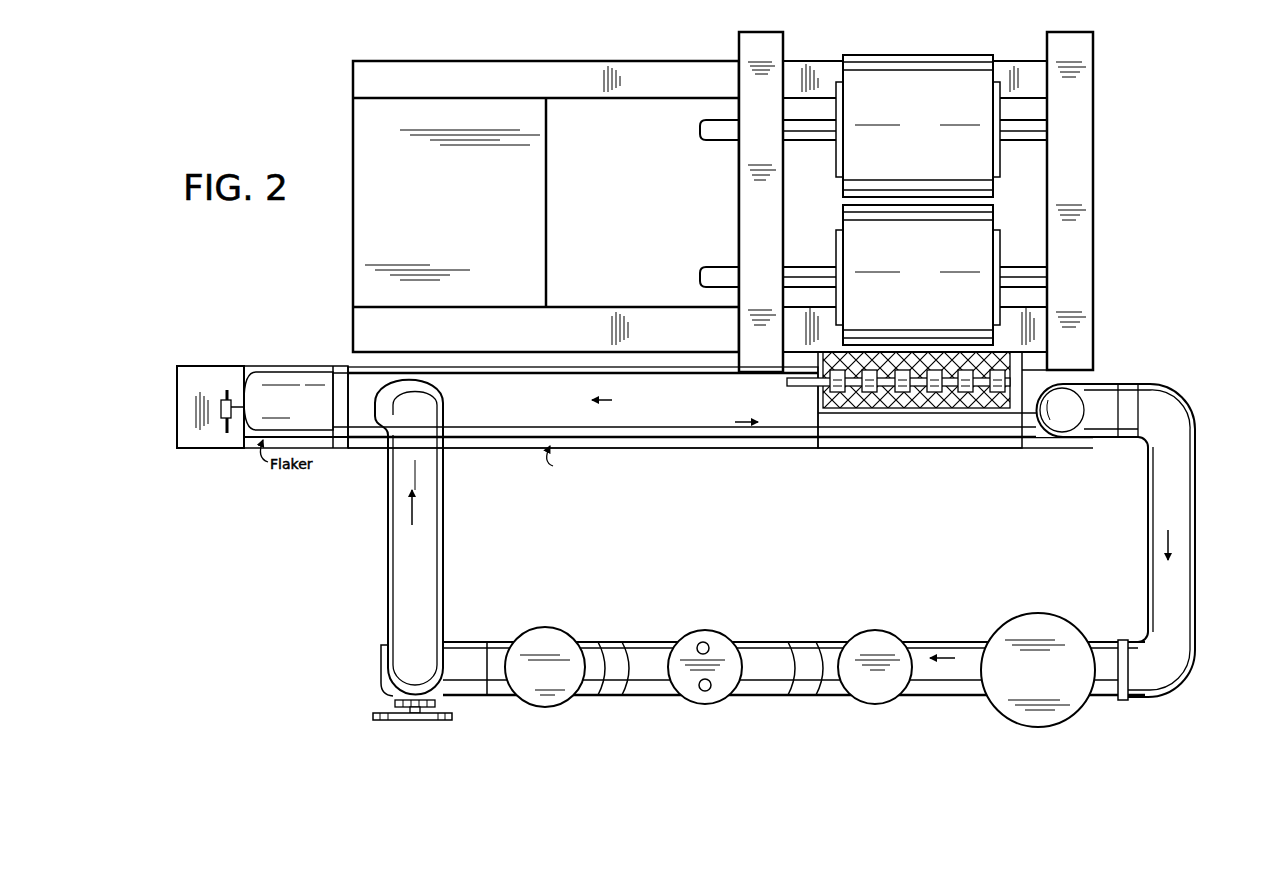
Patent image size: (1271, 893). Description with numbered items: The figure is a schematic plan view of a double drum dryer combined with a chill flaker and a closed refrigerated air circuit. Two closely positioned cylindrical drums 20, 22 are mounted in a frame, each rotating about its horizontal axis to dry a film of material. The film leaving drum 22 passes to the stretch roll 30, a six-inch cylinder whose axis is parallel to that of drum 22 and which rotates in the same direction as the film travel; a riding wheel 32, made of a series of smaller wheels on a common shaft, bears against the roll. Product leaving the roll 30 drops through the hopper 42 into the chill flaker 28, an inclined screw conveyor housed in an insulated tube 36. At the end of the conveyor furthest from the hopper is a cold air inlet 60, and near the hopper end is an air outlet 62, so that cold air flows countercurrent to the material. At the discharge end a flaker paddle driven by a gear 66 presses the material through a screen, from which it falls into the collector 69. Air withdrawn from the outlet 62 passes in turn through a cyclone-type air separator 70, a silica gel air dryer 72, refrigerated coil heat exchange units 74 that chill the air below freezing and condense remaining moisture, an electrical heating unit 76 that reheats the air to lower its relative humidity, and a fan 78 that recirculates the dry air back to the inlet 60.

The cylindrical drum 20 is at (929, 131).
The cylindrical drum 22 is at (929, 280).
The chill flaker 28 is at (525, 365).
The stretch roll 30 is at (1015, 360).
The riding wheel 32 is at (958, 363).
The insulated tube 36 is at (654, 380).
The hopper 42 is at (967, 430).
The cold air inlet conduit 60 is at (378, 392).
The air outlet 62 is at (1068, 405).
The gear 66 is at (221, 400).
The collector 69 is at (212, 450).
The air separator 70 is at (1060, 600).
The silica gel air dryer 72 is at (887, 727).
The refrigerated coil heat exchange units 74 is at (700, 648).
The electrical heating unit 76 is at (575, 732).
The fan 78 is at (432, 723).